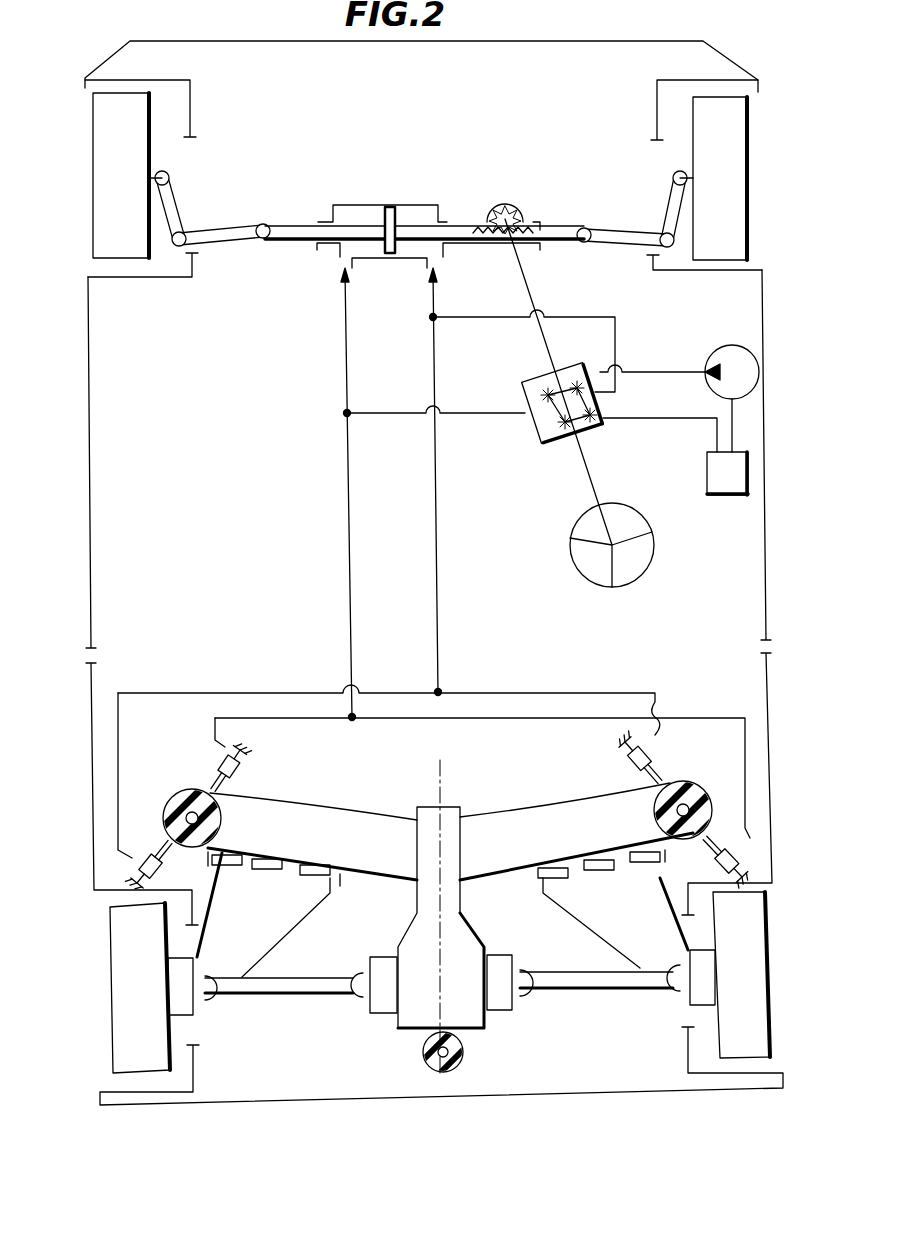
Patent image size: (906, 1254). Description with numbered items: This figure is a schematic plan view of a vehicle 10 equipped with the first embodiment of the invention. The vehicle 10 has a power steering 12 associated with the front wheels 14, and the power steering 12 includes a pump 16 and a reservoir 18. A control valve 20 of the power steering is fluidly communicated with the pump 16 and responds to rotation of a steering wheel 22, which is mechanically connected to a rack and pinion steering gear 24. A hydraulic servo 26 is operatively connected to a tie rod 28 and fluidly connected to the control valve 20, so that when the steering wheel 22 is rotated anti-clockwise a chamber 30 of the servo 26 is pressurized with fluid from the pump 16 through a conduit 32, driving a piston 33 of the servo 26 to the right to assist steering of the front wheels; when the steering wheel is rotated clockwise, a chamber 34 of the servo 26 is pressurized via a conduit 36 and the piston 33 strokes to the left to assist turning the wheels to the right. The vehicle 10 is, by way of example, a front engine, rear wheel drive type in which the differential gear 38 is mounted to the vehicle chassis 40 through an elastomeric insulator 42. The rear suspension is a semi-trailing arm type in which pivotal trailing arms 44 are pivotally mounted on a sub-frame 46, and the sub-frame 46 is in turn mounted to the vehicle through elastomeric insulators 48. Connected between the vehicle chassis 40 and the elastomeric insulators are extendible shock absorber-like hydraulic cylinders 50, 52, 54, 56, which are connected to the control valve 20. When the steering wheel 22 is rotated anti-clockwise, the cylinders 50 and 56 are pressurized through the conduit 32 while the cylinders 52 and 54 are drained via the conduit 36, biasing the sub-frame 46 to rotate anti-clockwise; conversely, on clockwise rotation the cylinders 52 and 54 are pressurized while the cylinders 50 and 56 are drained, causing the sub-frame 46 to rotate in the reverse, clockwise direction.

The vehicle 10 is at (91, 510).
The power steering 12 is at (402, 200).
The front wheels 14 is at (105, 150).
The pump 16 is at (705, 385).
The reservoir 18 is at (707, 476).
The control valve 20 is at (538, 438).
The steering wheel 22 is at (570, 558).
The rack and pinion steering gear 24 is at (485, 202).
The hydraulic servo 26 is at (370, 260).
The tie rod 28 is at (285, 228).
The chamber 30 is at (340, 250).
The conduit 32 is at (345, 407).
The piston 33 is at (383, 215).
The chamber 34 is at (437, 250).
The conduit 36 is at (433, 378).
The differential gear 38 is at (407, 1013).
The vehicle chassis 40 is at (255, 748).
The elastomeric insulator 42 is at (465, 1060).
The trailing arms 44 is at (300, 915).
The sub-frame 46 is at (340, 818).
The elastomeric insulators 48 is at (185, 797).
The hydraulic cylinder 50 is at (230, 757).
The hydraulic cylinder 52 is at (150, 860).
The hydraulic cylinder 54 is at (625, 762).
The hydraulic cylinder 56 is at (745, 835).